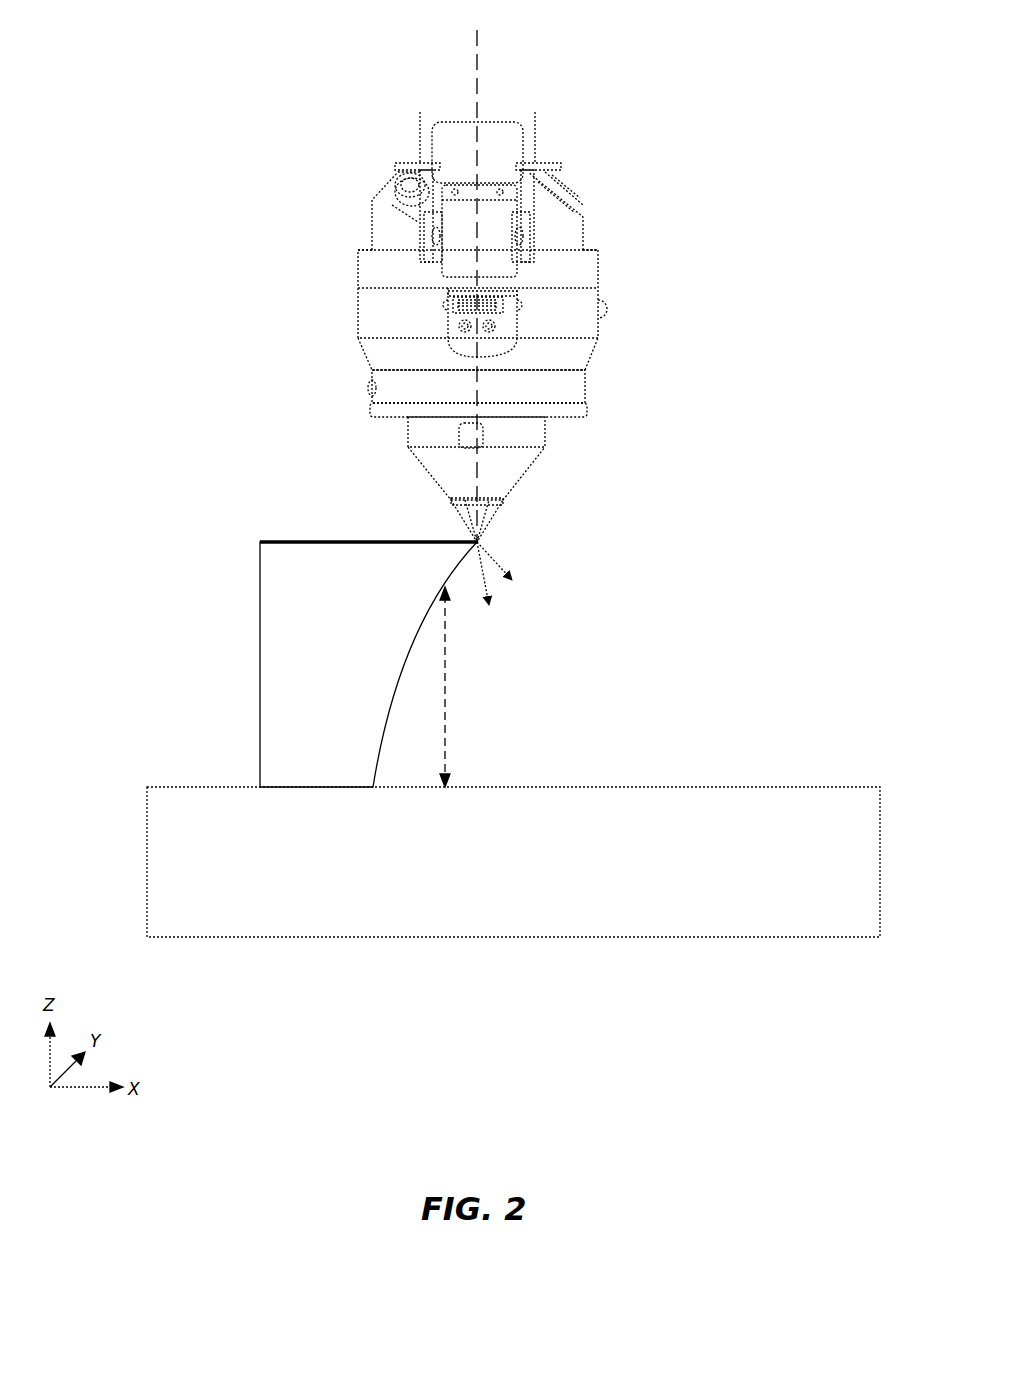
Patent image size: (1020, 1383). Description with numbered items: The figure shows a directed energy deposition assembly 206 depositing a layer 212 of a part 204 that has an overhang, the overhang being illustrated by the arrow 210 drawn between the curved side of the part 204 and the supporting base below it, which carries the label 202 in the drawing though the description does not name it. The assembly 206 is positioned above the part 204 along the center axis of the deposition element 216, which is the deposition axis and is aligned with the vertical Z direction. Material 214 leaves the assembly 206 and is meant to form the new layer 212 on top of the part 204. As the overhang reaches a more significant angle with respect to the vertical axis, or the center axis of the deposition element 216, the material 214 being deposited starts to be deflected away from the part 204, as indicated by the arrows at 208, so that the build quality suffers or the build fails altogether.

The substrate 202 is at (531, 885).
The part 204 is at (356, 641).
The directed energy deposition assembly 206 is at (598, 250).
The arrows 208 is at (514, 555).
The arrow 210 is at (445, 730).
The layer 212 is at (410, 542).
The material 214 is at (496, 508).
The center axis of the deposition element 216 is at (477, 38).